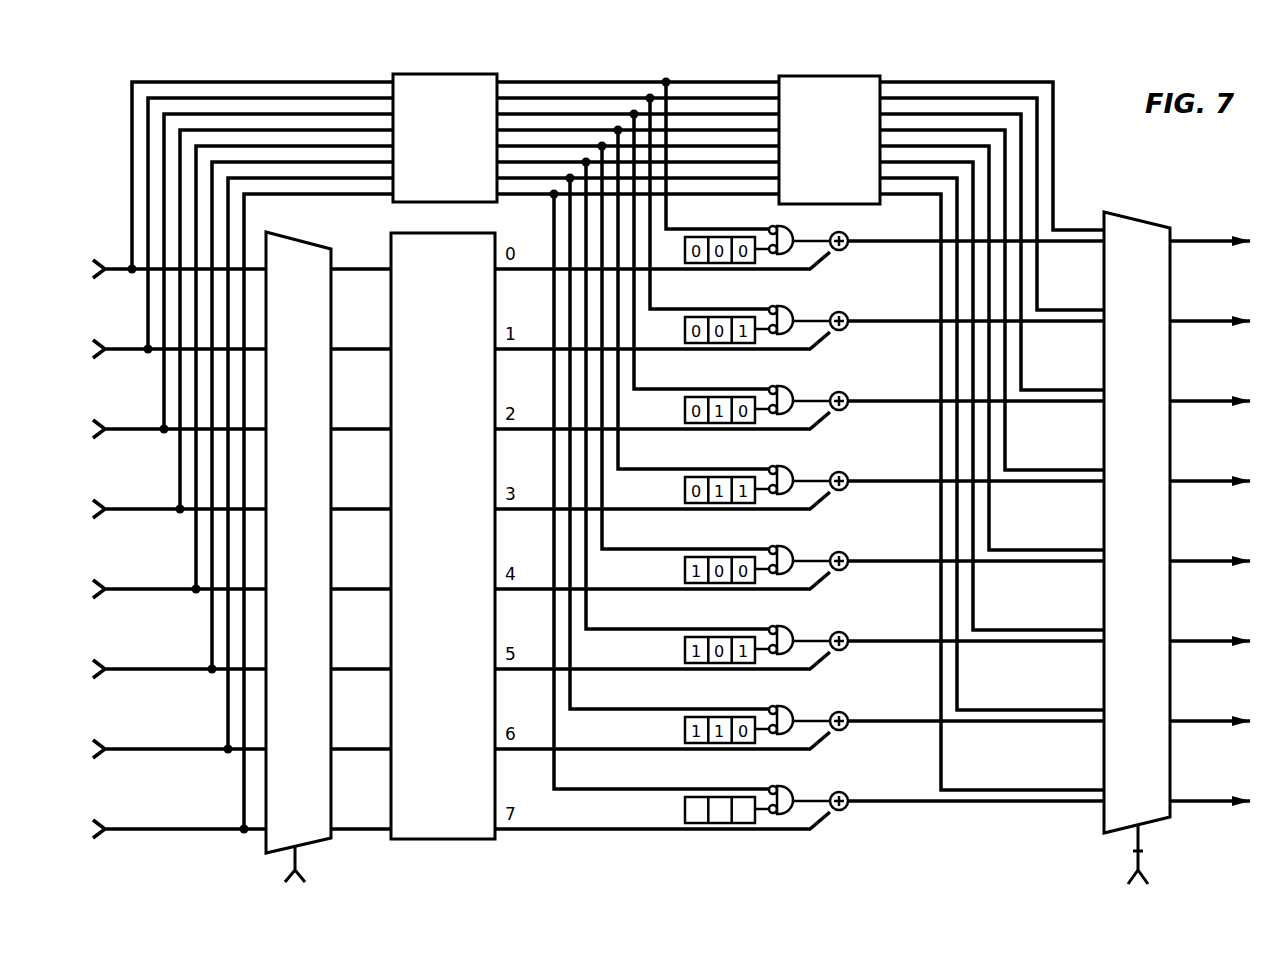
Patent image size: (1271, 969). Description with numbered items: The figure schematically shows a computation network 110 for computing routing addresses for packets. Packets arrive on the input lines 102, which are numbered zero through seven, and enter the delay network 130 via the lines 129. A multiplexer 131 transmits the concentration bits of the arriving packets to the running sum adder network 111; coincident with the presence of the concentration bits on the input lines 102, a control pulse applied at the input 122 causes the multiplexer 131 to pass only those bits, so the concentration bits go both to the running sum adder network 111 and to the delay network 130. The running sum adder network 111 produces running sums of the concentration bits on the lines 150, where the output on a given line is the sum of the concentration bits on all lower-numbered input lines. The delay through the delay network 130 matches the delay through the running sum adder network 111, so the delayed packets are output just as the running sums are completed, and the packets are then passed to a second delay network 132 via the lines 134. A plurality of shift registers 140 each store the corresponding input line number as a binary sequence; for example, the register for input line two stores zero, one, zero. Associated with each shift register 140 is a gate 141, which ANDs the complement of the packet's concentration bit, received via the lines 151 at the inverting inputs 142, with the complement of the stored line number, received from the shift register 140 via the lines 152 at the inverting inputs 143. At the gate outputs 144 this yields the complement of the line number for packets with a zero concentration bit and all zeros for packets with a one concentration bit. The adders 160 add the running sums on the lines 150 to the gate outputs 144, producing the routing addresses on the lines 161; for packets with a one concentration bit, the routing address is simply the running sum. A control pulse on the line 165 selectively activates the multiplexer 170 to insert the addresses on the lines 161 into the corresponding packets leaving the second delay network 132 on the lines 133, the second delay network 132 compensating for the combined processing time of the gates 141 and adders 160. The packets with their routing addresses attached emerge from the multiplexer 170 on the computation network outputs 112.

The input lines 102 is at (125, 268).
The lines 129 is at (156, 80).
The delay network 130 is at (393, 74).
The computation network 110 is at (580, 77).
The lines 134 is at (640, 74).
The second delay network 132 is at (858, 74).
The lines 133 is at (1008, 80).
The multiplexer 170 is at (1133, 214).
The computation network outputs 112 is at (1192, 240).
The input 122 is at (292, 862).
The multiplexer 131 is at (316, 843).
The running sum adder network 111 is at (433, 840).
The lines 150 is at (522, 830).
The lines 151 is at (622, 788).
The lines 152 is at (770, 787).
The inverting inputs 142 is at (777, 786).
The gate outputs 144 is at (794, 800).
The shift registers 140 is at (683, 812).
The inverting inputs 143 is at (770, 815).
The gate 141 is at (766, 808).
The adders 160 is at (846, 808).
The lines 161 is at (1036, 803).
The line 165 is at (1141, 851).